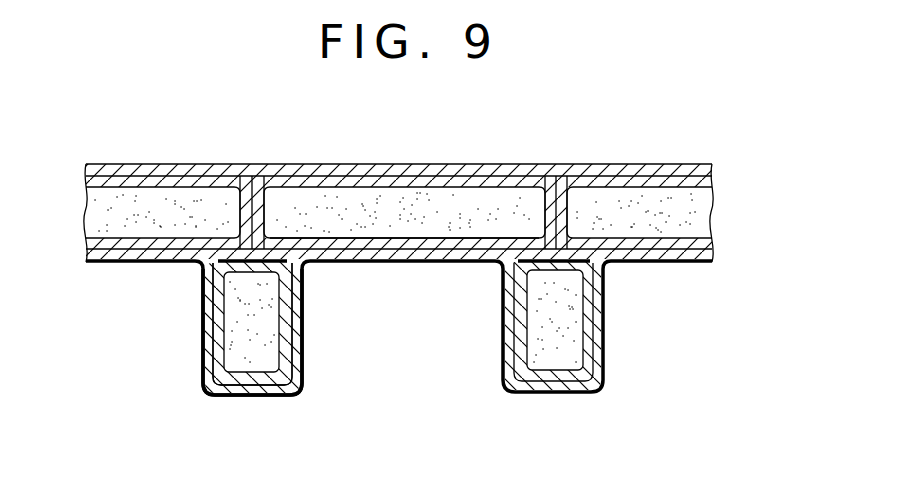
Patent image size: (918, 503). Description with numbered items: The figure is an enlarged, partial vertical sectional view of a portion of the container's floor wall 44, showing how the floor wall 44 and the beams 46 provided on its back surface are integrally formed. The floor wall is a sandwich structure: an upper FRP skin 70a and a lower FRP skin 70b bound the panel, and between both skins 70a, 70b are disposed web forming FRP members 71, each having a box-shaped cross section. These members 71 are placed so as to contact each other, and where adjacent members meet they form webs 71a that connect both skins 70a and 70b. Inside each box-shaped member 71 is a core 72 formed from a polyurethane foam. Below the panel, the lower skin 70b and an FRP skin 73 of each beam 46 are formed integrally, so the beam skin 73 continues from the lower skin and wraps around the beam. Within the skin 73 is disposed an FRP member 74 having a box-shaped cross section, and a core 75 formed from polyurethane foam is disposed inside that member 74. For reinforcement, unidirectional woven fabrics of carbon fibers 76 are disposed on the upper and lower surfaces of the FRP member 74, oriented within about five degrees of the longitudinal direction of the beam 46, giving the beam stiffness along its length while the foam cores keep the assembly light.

The floor wall 44 is at (580, 156).
The beam 46 is at (193, 338).
The FRP skin 70a is at (480, 167).
The FRP skin 70b is at (447, 263).
The web forming FRP member 71 is at (411, 182).
The web 71a is at (273, 214).
The core 72 is at (378, 228).
The FRP skin 73 is at (302, 357).
The FRP member 74 is at (520, 358).
The core 75 is at (245, 355).
The unidirectional woven fabric of carbon fibers 76 is at (200, 275).